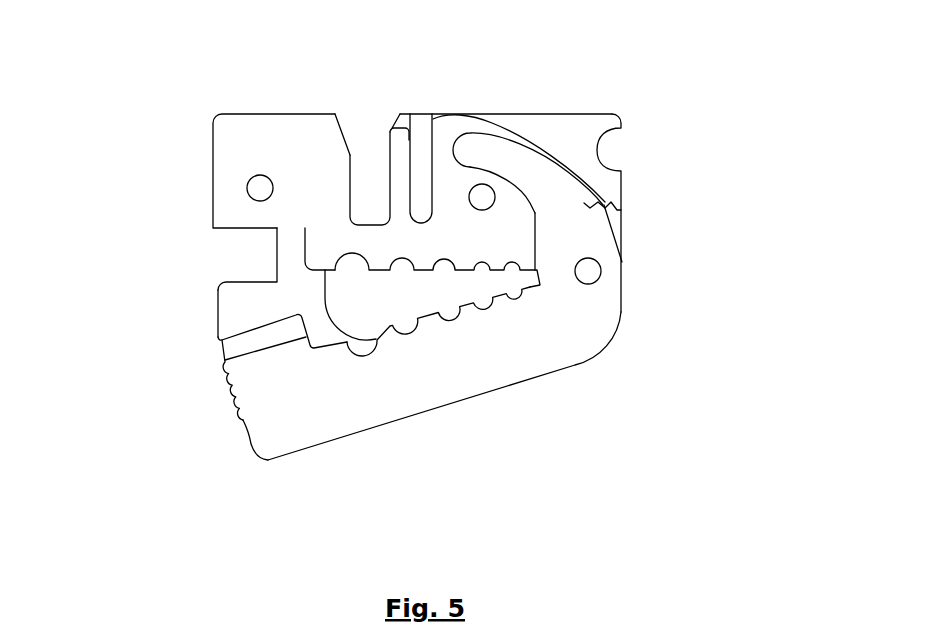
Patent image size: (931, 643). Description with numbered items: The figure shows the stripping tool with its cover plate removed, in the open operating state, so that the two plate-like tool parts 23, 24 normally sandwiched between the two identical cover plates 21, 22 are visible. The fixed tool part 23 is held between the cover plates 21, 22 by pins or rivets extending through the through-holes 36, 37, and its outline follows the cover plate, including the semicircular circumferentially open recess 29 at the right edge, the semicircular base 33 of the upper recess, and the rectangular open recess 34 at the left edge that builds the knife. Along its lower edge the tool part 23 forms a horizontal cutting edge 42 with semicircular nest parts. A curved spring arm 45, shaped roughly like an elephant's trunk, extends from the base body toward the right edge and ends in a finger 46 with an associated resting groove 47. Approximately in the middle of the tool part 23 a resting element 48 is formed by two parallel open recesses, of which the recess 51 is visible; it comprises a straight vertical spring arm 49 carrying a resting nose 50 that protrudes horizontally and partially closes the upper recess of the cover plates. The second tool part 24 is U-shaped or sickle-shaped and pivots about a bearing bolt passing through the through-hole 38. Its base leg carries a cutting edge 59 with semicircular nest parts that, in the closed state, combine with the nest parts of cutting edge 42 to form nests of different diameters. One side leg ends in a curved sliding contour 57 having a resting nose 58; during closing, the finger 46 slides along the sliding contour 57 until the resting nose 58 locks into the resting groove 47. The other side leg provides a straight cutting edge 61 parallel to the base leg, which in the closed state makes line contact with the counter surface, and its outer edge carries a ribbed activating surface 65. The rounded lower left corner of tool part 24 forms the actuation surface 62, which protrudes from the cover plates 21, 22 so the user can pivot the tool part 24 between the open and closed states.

The cover plate 21 is at (154, 311).
The cover plate 22 is at (234, 307).
The tool part 23 is at (306, 140).
The tool part 24 is at (442, 388).
The recess 29 is at (598, 148).
The base 33 is at (362, 178).
The recess 34 is at (248, 255).
The through-hole 36 is at (260, 186).
The through-hole 37 is at (483, 198).
The through-hole 38 is at (590, 271).
The cutting edge 42 is at (423, 282).
The spring arm 45 is at (515, 133).
The finger 46 is at (612, 208).
The resting groove 47 is at (577, 172).
The resting element 48 is at (405, 103).
The spring arm 49 is at (396, 177).
The resting nose 50 is at (366, 178).
The recess 51 is at (367, 207).
The sliding contour 57 is at (556, 212).
The resting nose 58 is at (583, 205).
The cutting edge 59 is at (389, 320).
The cutting edge 61 is at (242, 331).
The actuation surface 62 is at (262, 462).
The activating surface 65 is at (242, 420).